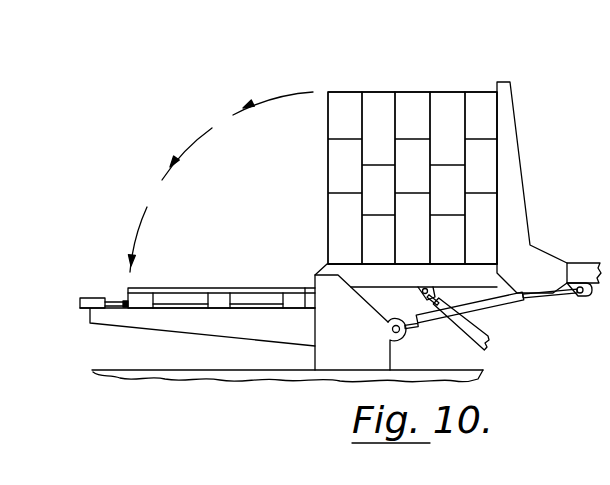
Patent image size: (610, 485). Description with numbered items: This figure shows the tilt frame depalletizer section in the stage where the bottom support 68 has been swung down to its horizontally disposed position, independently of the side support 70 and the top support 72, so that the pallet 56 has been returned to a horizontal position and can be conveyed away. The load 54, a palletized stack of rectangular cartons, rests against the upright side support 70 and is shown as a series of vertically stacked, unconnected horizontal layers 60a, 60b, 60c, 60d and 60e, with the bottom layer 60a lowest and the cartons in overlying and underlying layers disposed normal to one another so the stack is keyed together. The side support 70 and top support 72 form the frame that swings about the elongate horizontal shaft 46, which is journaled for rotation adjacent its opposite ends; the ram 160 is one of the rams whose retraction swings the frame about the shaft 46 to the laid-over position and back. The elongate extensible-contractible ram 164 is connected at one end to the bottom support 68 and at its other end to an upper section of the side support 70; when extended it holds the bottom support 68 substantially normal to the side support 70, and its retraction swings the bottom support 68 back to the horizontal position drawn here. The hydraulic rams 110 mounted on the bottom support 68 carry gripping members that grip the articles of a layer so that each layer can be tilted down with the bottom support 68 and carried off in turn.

The load 54 is at (310, 173).
The bottom layer of cartons 60a is at (342, 95).
The layer of cartons 60b is at (373, 92).
The layer of cartons 60c is at (412, 95).
The layer of cartons 60d is at (447, 92).
The layer of cartons 60e is at (480, 93).
The top support 72 is at (532, 163).
The upright side support 70 is at (588, 267).
The shaft 46 is at (329, 290).
The extensible-contractible ram 164 is at (530, 303).
The ram 160 is at (480, 345).
The bottom support 68 is at (188, 337).
The pallet 56 is at (172, 286).
The hydraulic ram 110 is at (97, 300).